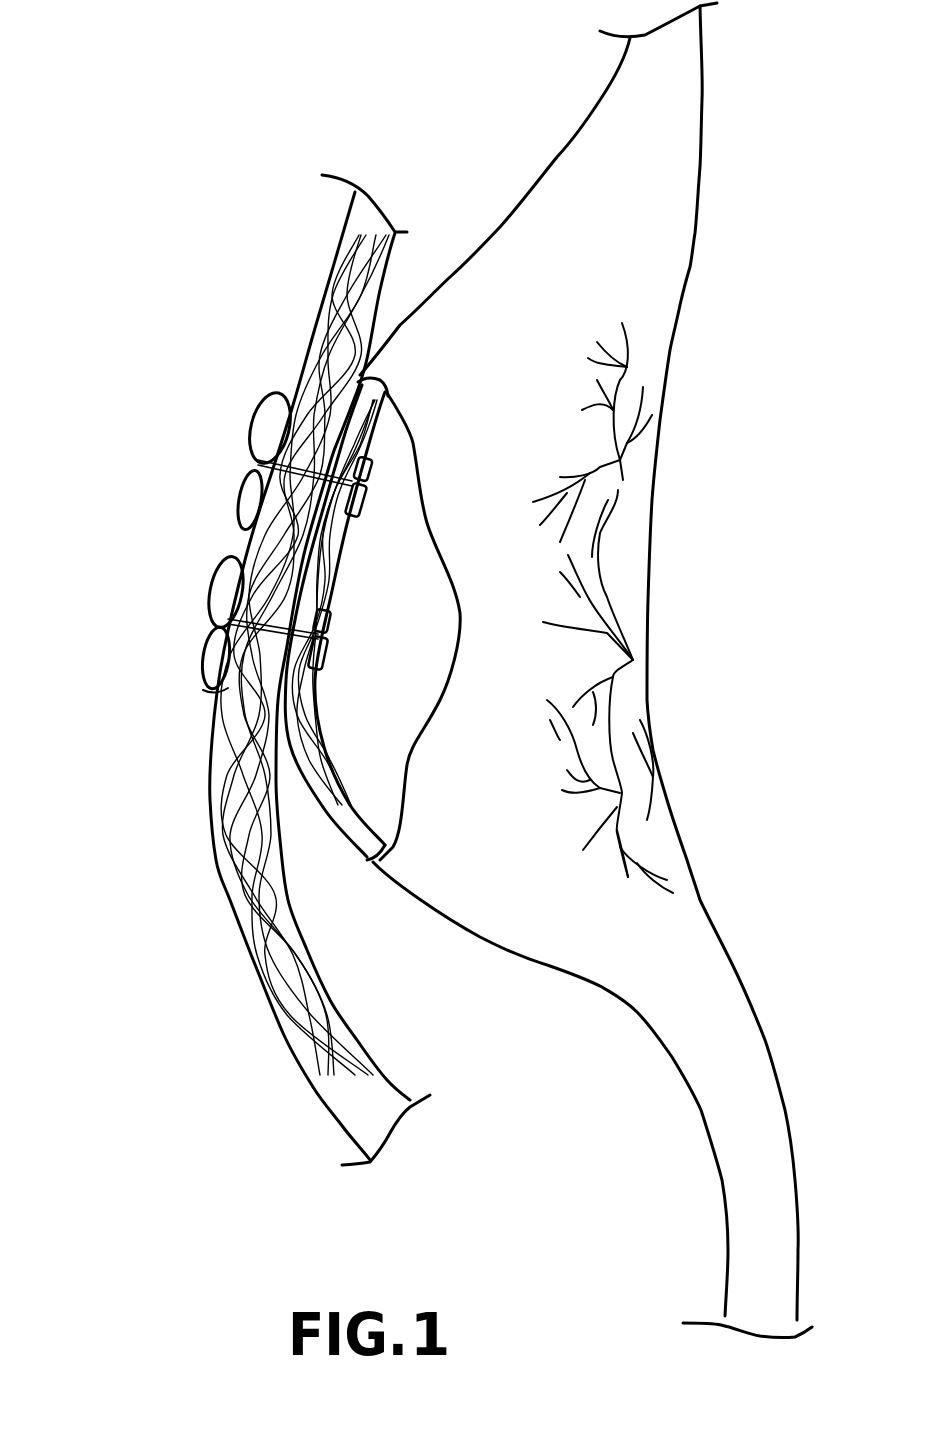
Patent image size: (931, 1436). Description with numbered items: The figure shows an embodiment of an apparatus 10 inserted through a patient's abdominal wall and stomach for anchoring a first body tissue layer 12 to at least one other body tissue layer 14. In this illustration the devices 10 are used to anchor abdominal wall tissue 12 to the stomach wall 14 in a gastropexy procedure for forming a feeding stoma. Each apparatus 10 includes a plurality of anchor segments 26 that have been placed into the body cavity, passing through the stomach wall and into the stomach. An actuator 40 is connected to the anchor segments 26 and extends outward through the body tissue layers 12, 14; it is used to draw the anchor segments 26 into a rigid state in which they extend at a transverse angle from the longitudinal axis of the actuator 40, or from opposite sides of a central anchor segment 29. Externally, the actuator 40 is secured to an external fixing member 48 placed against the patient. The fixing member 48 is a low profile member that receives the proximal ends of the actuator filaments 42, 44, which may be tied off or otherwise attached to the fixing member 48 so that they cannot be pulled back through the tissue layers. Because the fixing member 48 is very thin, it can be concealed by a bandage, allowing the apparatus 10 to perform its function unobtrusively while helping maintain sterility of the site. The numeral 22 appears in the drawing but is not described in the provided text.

The apparatus 10 is at (251, 519).
The first body tissue layer 12 is at (240, 800).
The other body tissue layer 14 is at (513, 248).
The second anchor button 22 is at (212, 650).
The anchor segments 26 is at (334, 623).
The central anchor segment 29 is at (370, 481).
The actuator 40 is at (230, 418).
The actuator filament 42 is at (268, 682).
The actuator filament 44 is at (280, 474).
The external fixing member 48 is at (178, 656).